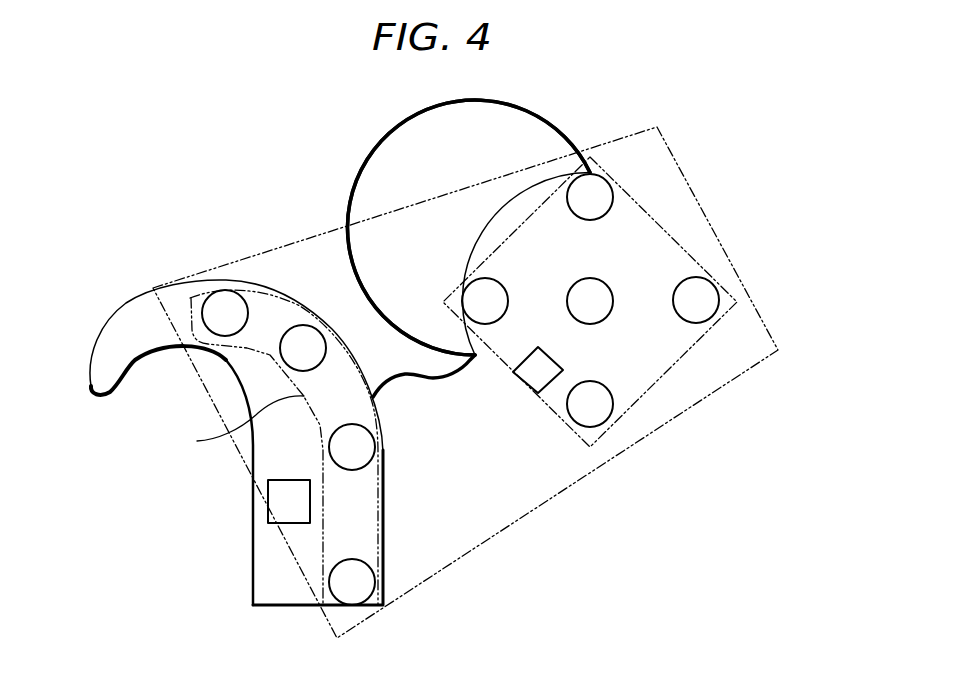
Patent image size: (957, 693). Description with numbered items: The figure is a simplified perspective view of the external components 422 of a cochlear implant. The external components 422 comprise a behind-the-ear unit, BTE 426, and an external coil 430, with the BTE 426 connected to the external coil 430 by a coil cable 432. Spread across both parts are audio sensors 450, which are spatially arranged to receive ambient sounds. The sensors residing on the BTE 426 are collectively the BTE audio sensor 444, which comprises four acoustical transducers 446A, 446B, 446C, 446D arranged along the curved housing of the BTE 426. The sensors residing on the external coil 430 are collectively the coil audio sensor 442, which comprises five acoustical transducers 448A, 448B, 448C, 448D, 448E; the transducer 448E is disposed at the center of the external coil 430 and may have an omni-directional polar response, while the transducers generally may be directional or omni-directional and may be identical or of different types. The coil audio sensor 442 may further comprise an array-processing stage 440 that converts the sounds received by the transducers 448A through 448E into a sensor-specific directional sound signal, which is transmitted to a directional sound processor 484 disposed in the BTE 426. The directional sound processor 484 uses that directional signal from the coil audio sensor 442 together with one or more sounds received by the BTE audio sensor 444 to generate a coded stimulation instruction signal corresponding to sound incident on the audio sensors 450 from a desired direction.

The external components 422 is at (635, 612).
The BTE 426 is at (253, 552).
The external coil 430 is at (520, 188).
The coil cable 432 is at (405, 375).
The array-processing stage 440 is at (542, 373).
The coil audio sensor 442 is at (690, 352).
The BTE audio sensor 444 is at (164, 439).
The acoustical transducer 446A is at (240, 311).
The acoustical transducer 446B is at (312, 347).
The acoustical transducer 446C is at (360, 448).
The acoustical transducer 446D is at (365, 590).
The acoustical transducer 448A is at (481, 294).
The acoustical transducer 448B is at (590, 192).
The acoustical transducer 448C is at (696, 292).
The acoustical transducer 448D is at (598, 415).
The acoustical transducer 448E is at (598, 306).
The audio sensors 450 is at (294, 244).
The directional sound processor 484 is at (283, 510).